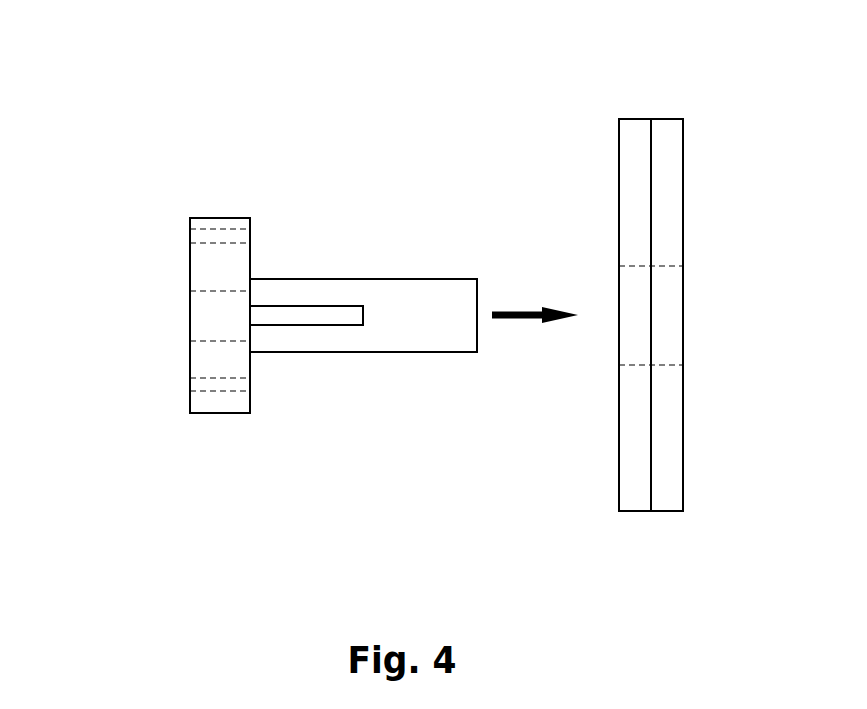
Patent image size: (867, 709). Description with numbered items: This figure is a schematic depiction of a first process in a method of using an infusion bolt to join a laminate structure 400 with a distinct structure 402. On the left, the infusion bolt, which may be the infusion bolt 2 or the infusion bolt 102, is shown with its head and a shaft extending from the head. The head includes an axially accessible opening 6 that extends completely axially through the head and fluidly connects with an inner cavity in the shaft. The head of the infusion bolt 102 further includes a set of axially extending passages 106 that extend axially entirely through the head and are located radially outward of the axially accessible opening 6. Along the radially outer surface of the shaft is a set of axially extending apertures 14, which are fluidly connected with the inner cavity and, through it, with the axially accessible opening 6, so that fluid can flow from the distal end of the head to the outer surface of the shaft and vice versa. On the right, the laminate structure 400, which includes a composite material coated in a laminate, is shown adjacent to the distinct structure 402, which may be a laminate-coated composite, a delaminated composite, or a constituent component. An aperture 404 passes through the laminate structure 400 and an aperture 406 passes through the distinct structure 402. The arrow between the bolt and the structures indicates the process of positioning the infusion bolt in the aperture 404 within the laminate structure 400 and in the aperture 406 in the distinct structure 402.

The infusion bolt 2 is at (254, 296).
The infusion bolt 102 is at (287, 334).
The axially accessible opening 6 is at (181, 306).
The set of axially extending passages 106 is at (177, 394).
The set of axially extending apertures 14 is at (309, 301).
The laminate structure 400 is at (664, 283).
The distinct structure 402 is at (668, 482).
The aperture 404 is at (614, 288).
The aperture 406 is at (695, 315).